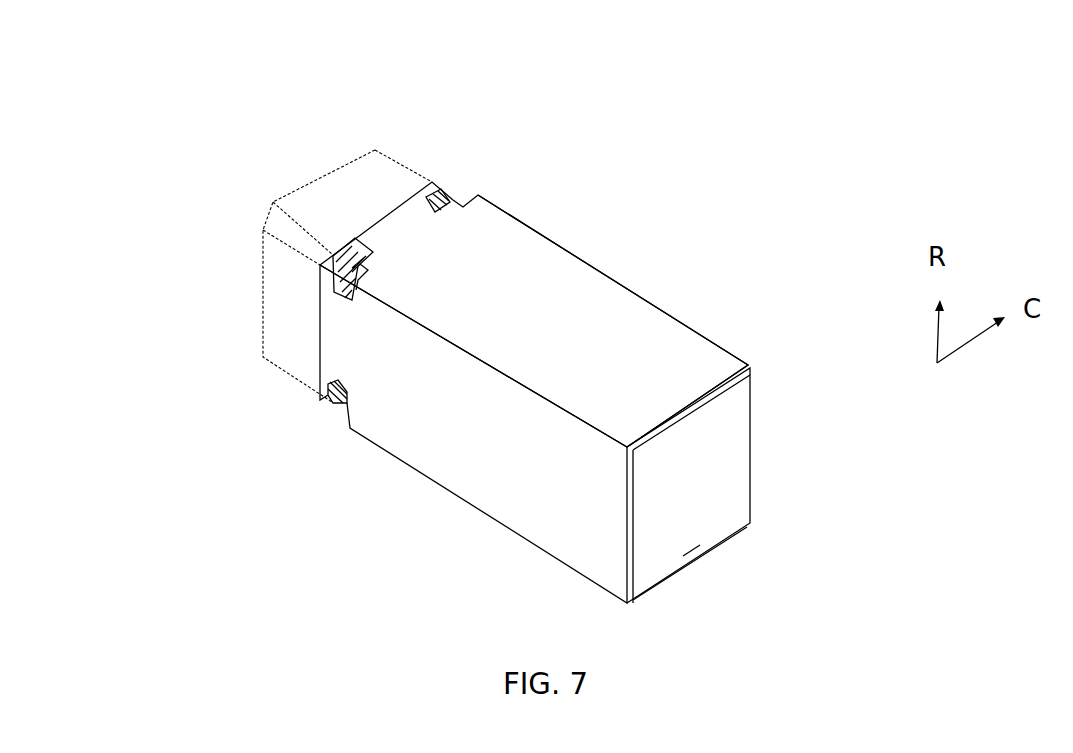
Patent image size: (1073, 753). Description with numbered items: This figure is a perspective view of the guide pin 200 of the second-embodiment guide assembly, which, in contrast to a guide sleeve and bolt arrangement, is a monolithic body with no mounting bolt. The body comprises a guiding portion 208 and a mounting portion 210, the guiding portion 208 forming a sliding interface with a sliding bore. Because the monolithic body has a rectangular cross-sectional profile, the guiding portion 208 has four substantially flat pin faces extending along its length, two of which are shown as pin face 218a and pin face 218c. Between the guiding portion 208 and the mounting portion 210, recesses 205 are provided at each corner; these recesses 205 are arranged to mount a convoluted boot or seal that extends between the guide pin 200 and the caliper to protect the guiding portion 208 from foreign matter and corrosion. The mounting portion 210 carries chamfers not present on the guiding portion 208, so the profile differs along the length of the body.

The guide pin 200 is at (450, 313).
The recess 205 is at (450, 193).
The guiding portion 208 is at (547, 340).
The mounting portion 210 is at (342, 187).
The pin face 218a is at (463, 292).
The pin face 218c is at (527, 499).